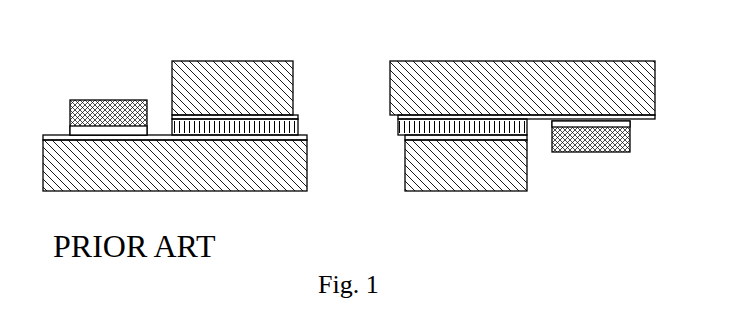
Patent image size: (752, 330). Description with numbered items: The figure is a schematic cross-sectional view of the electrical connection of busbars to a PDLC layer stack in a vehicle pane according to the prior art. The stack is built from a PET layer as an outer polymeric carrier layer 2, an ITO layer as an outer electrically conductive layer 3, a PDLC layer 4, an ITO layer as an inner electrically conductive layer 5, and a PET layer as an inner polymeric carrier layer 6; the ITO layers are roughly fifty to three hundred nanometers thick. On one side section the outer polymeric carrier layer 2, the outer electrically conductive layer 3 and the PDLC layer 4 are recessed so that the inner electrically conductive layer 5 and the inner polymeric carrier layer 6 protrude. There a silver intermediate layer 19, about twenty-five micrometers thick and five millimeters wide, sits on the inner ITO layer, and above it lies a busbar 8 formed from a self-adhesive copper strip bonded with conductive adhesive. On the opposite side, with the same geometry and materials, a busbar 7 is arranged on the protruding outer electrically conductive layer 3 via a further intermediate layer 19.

The outer polymeric carrier layer 2 is at (390, 90).
The outer electrically conductive layer 3 is at (390, 114).
The PDLC layer 4 is at (403, 127).
The inner electrically conductive layer 5 is at (404, 138).
The inner polymeric carrier layer 6 is at (405, 165).
The busbar 7 is at (592, 153).
The busbar 8 is at (108, 99).
The intermediate layer 19 is at (68, 131).